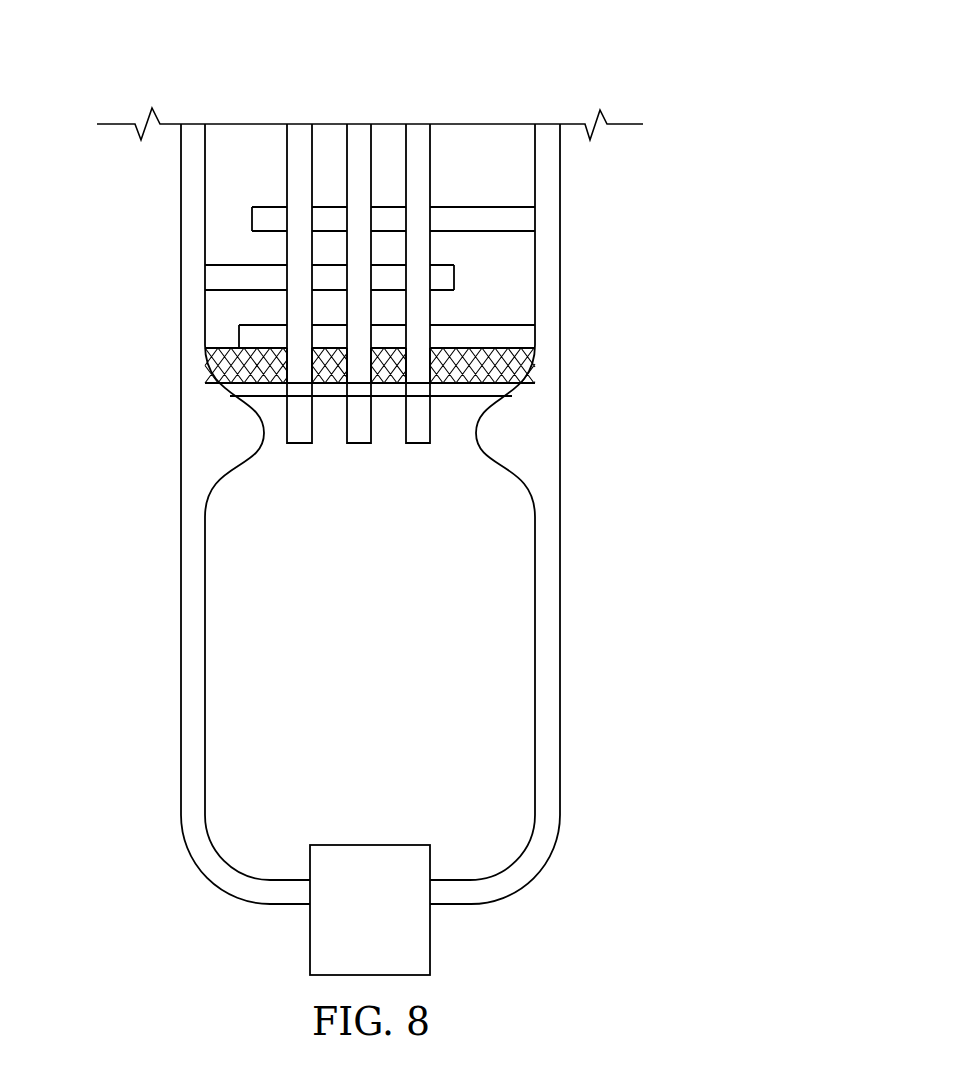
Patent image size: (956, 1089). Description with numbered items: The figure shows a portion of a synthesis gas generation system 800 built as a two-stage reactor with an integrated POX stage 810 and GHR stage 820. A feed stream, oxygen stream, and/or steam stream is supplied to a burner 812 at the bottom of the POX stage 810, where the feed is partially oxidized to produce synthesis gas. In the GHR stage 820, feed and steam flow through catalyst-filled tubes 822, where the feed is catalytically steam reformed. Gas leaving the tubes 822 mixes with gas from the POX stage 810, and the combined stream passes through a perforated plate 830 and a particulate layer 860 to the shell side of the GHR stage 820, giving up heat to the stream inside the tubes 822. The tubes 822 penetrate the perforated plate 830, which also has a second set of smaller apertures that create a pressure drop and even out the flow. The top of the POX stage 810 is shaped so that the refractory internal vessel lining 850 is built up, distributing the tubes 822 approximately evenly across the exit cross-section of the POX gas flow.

The synthesis gas generation system 800 is at (218, 66).
The POX stage 810 is at (347, 660).
The burner 812 is at (347, 927).
The GHR stage 820 is at (610, 133).
The tubes 822 is at (346, 152).
The perforated plate 830 is at (230, 388).
The refractory internal vessel lining 850 is at (204, 510).
The particulate layer 860 is at (533, 366).